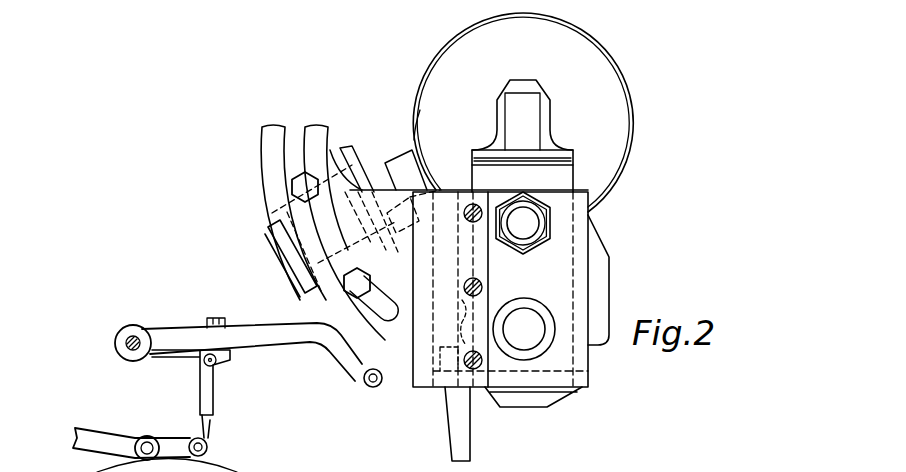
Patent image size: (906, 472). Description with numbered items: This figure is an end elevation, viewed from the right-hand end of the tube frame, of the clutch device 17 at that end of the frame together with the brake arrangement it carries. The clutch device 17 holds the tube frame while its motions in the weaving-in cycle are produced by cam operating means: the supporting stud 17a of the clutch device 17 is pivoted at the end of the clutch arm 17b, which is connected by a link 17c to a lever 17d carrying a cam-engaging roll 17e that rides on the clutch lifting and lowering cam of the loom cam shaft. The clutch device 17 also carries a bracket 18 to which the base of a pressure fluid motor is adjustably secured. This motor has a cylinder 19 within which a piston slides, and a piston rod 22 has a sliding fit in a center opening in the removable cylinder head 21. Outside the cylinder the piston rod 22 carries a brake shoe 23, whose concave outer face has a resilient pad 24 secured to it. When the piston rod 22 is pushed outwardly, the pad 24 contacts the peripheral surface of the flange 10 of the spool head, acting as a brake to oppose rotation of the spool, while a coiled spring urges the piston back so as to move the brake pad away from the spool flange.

The flange 10 is at (630, 135).
The clutch device 17 is at (565, 283).
The supporting stud 17a is at (524, 329).
The clutch arm 17b is at (268, 337).
The link 17c is at (210, 386).
The lever 17d is at (101, 434).
The cam-engaging roll 17e is at (157, 436).
The bracket 18 is at (360, 316).
The cylinder 19 is at (268, 228).
The cylinder head 21 is at (342, 150).
The piston rod 22 is at (383, 186).
The brake shoe 23 is at (389, 163).
The resilient pad 24 is at (414, 140).